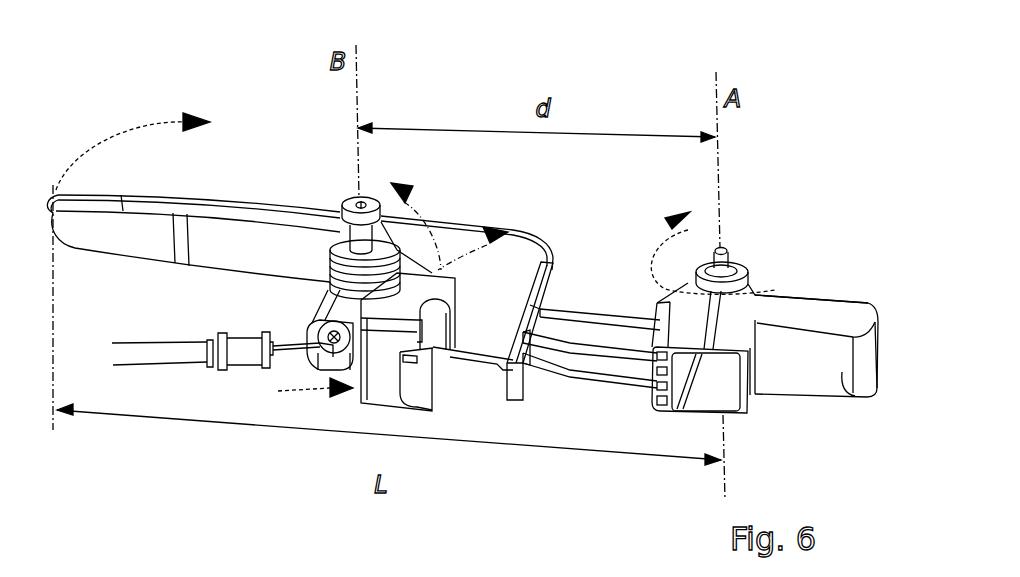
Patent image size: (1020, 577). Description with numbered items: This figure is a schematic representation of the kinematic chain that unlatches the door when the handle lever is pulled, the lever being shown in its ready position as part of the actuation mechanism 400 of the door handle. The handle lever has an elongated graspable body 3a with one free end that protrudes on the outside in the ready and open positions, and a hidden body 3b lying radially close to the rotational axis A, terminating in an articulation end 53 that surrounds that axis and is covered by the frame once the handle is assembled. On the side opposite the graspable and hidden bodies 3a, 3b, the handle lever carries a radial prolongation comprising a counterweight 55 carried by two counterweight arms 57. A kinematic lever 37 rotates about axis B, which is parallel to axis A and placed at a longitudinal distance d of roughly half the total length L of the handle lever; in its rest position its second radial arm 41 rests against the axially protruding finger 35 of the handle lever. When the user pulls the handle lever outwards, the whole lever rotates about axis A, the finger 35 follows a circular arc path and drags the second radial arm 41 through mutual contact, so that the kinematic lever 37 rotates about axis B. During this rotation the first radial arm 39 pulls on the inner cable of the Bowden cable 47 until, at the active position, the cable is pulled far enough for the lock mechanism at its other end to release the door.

The graspable body 3a is at (293, 208).
The hidden body 3b is at (617, 310).
The axially protruding finger 35 is at (460, 312).
The kinematic lever 37 is at (333, 172).
The first radial arm 39 is at (310, 314).
The second radial arm 41 is at (433, 274).
The Bowden cable 47 is at (185, 367).
The articulation end 53 is at (752, 406).
The counterweight 55 is at (860, 358).
The counterweight arms 57 is at (810, 310).
The actuation mechanism 400 is at (790, 176).